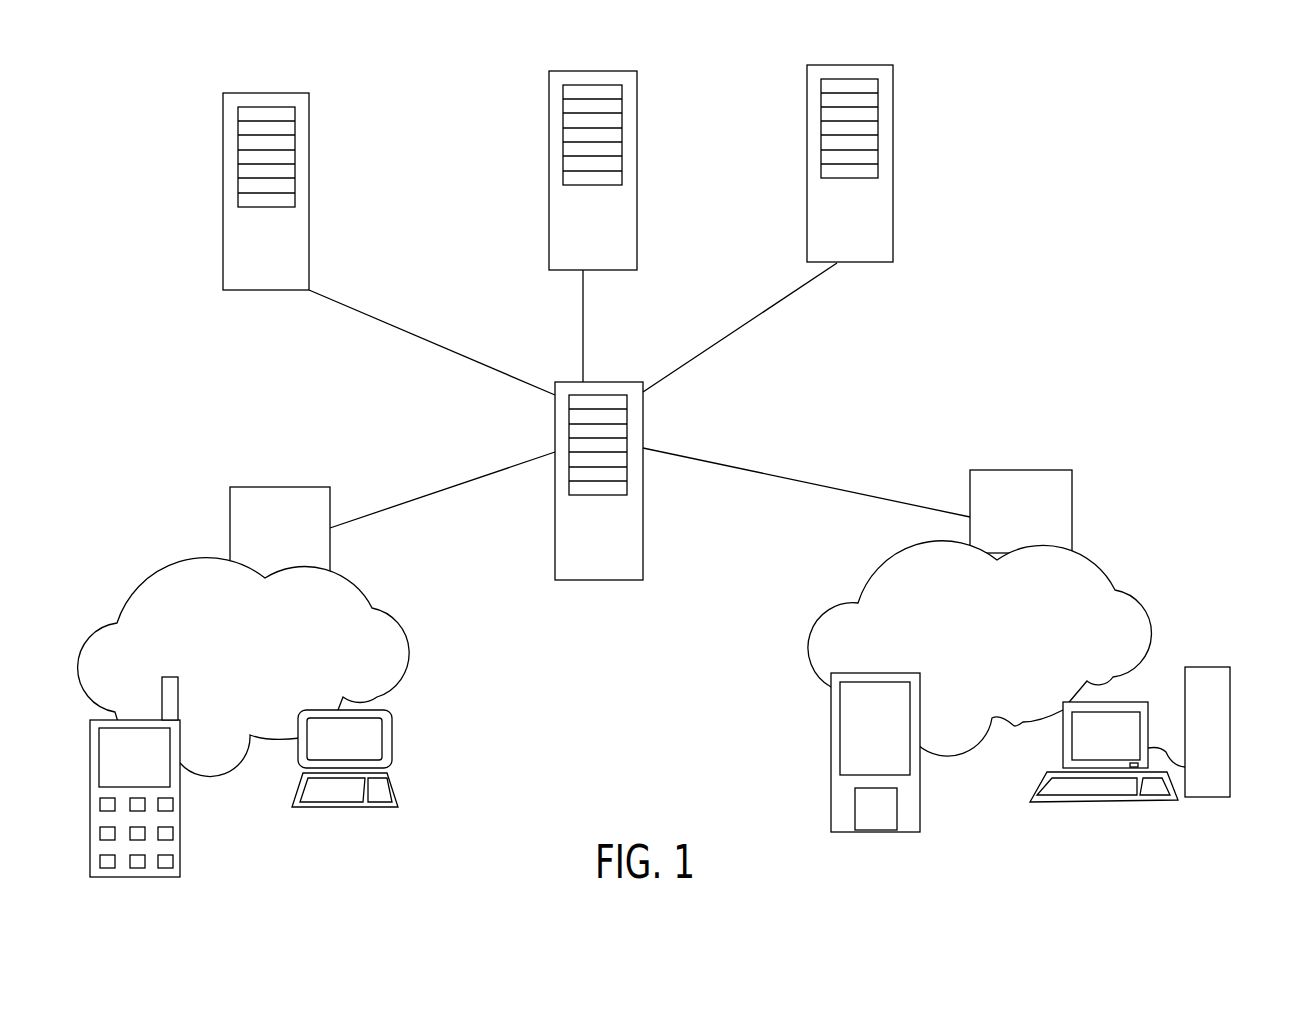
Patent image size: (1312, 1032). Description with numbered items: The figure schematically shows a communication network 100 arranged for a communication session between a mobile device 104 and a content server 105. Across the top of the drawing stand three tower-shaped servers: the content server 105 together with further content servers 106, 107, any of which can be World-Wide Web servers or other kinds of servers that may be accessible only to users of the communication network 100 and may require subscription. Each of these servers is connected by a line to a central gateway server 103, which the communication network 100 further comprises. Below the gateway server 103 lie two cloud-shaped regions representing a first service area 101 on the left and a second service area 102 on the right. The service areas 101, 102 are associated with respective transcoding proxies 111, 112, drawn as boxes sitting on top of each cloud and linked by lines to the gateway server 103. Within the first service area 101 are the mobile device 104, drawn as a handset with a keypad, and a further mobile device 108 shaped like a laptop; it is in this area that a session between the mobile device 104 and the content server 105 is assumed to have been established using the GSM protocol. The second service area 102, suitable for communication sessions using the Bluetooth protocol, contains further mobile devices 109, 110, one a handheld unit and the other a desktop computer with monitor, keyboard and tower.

The communication network 100 is at (1046, 251).
The first service area 101 is at (407, 647).
The second service area 102 is at (808, 635).
The gateway server 103 is at (560, 417).
The mobile device 104 is at (177, 847).
The content server 105 is at (240, 242).
The further content server 106 is at (565, 233).
The further content server 107 is at (820, 228).
The further mobile device 108 is at (398, 793).
The further mobile device 109 is at (837, 815).
The further mobile device 110 is at (1228, 765).
The transcoding proxy 111 is at (273, 492).
The transcoding proxy 112 is at (1027, 477).